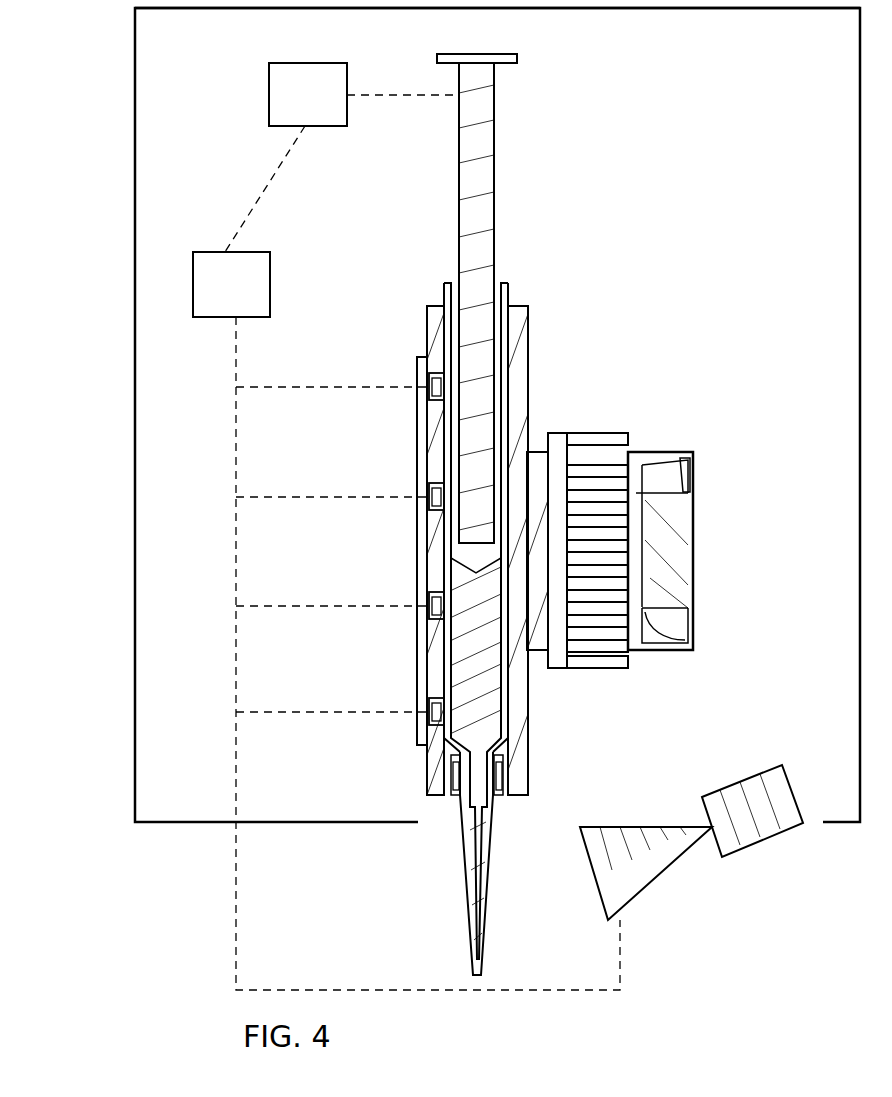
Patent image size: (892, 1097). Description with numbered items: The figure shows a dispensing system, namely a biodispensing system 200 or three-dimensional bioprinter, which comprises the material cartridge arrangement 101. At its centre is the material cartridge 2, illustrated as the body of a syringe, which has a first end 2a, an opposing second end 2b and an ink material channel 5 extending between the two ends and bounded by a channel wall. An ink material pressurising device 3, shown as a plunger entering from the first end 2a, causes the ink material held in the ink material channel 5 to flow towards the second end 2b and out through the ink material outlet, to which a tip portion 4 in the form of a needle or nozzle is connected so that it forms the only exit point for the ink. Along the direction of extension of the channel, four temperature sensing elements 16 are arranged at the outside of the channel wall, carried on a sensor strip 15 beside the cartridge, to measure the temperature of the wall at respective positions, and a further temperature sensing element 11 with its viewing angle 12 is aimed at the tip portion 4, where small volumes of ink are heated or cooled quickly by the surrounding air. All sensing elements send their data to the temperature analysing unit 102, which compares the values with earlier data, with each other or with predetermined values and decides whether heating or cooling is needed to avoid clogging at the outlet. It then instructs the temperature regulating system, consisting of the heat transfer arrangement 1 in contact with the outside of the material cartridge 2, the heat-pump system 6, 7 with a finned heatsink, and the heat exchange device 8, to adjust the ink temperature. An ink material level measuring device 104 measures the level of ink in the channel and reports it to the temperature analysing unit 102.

The biodispensing system 200 is at (124, 243).
The material cartridge arrangement 101 is at (660, 185).
The temperature analysing unit 102 is at (406, 621).
The ink material level measuring device 104 is at (342, 157).
The heat transfer arrangement 1 is at (428, 328).
The material cartridge 2 is at (447, 298).
The first end 2a is at (532, 294).
The second end 2b is at (414, 783).
The ink material pressurising device 3 is at (455, 222).
The tip portion 4 is at (463, 855).
The ink material channel 5 is at (515, 703).
The heat-pump system 6 is at (533, 460).
The heat-pump system 7 is at (620, 432).
The heat exchange device 8 is at (655, 650).
The temperature sensing element 11 is at (757, 843).
The viewing angle 12 is at (660, 880).
The sensor strip 15 is at (418, 550).
The temperature sensing elements 16 is at (430, 497).